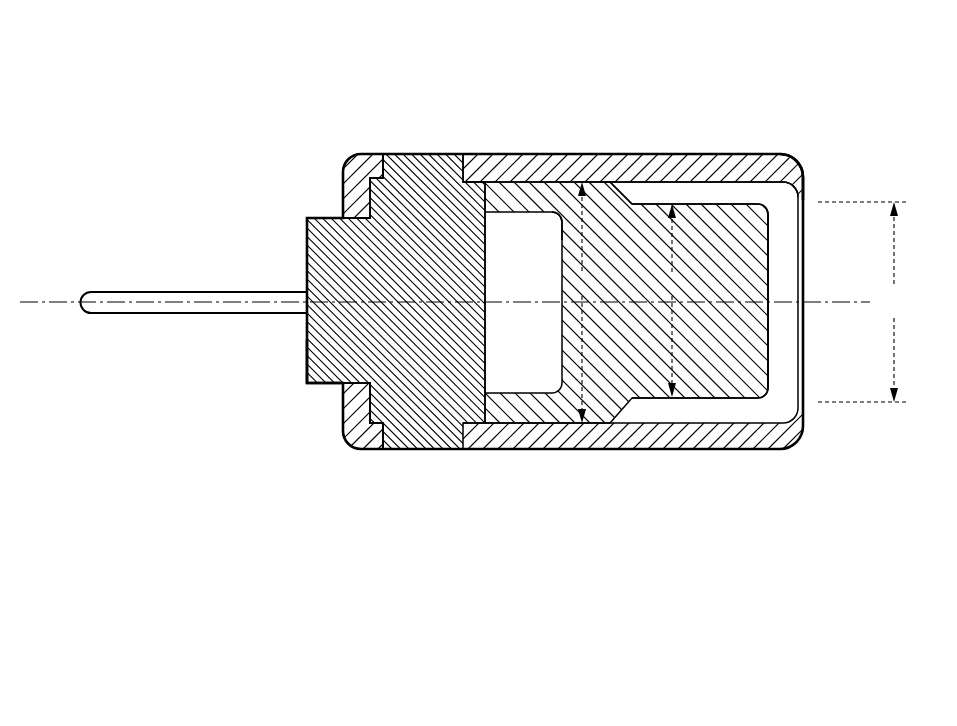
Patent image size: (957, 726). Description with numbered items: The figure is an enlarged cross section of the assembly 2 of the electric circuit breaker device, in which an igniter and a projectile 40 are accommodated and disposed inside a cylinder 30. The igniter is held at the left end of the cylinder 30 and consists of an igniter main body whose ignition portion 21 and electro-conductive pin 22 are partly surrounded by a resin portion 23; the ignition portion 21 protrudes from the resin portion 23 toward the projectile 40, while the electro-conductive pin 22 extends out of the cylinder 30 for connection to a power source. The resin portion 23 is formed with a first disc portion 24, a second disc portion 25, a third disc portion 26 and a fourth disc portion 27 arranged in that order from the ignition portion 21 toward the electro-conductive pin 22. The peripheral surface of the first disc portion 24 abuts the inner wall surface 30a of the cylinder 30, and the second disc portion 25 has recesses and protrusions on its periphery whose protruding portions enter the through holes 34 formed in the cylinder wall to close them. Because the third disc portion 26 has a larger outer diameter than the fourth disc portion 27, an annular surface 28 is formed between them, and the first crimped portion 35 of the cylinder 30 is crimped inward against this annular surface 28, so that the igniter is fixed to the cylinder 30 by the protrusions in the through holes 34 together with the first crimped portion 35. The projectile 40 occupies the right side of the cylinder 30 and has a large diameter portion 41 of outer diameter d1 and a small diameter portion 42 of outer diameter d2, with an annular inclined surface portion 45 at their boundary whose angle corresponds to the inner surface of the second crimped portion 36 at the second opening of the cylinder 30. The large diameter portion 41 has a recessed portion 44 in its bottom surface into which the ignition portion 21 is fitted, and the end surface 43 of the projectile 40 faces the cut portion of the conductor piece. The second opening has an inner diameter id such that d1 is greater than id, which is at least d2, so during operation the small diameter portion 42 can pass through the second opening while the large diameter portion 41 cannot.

The assembly 2 is at (742, 134).
The ignition portion 21 is at (520, 365).
The electro-conductive pin 22 is at (160, 313).
The resin portion 23 is at (397, 237).
The first disc portion 24 is at (483, 155).
The second disc portion 25 is at (420, 155).
The third disc portion 26 is at (365, 155).
The fourth disc portion 27 is at (308, 392).
The annular surface 28 is at (367, 407).
The cylinder 30 is at (630, 153).
The inner wall surface 30a is at (758, 192).
The through holes 34 is at (407, 433).
The first crimped portion 35 is at (352, 192).
The second crimped portion 36 is at (803, 187).
The projectile 40 is at (600, 370).
The large diameter portion 41 is at (600, 448).
The small diameter portion 42 is at (715, 388).
The end surface 43 is at (770, 252).
The recessed portion 44 is at (550, 247).
The annular inclined surface portion 45 is at (640, 192).
The outer diameter of the large diameter portion d1 is at (580, 302).
The outer diameter of the small diameter portion d2 is at (672, 300).
The inner diameter of the second opening id is at (862, 302).